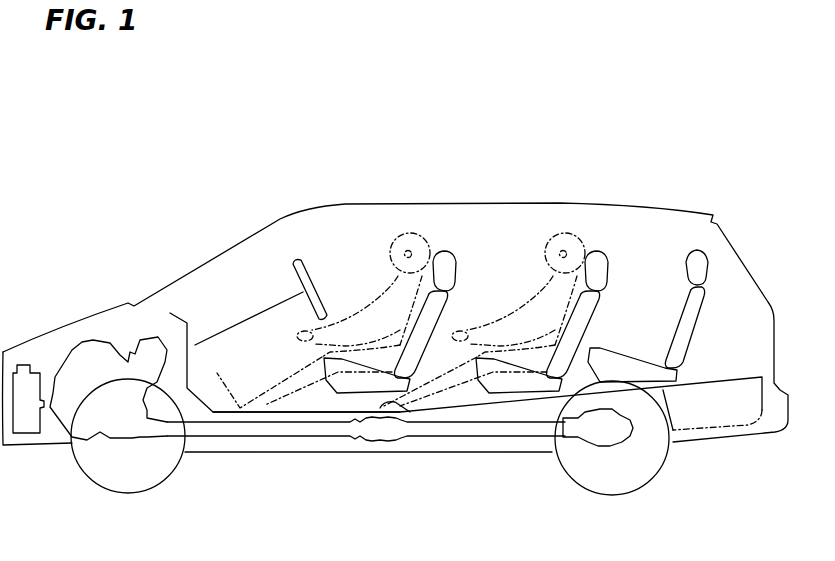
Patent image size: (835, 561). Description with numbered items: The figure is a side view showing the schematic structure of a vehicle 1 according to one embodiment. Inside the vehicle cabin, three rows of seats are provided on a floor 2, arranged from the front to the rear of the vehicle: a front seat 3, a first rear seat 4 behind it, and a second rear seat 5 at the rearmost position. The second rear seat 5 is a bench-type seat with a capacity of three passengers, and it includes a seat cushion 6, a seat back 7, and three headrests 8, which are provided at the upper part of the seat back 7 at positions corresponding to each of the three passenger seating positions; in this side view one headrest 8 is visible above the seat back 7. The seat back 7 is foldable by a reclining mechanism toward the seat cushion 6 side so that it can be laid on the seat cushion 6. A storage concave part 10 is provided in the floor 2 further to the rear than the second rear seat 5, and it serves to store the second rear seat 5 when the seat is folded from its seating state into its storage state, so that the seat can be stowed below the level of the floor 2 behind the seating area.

The vehicle 1 is at (276, 191).
The floor 2 is at (290, 412).
The front seat 3 is at (461, 254).
The first rear seat 4 is at (609, 258).
The second rear seat 5 is at (716, 259).
The seat cushion 6 is at (623, 357).
The seat back 7 is at (686, 325).
The headrest 8 is at (690, 264).
The storage concave part 10 is at (722, 423).